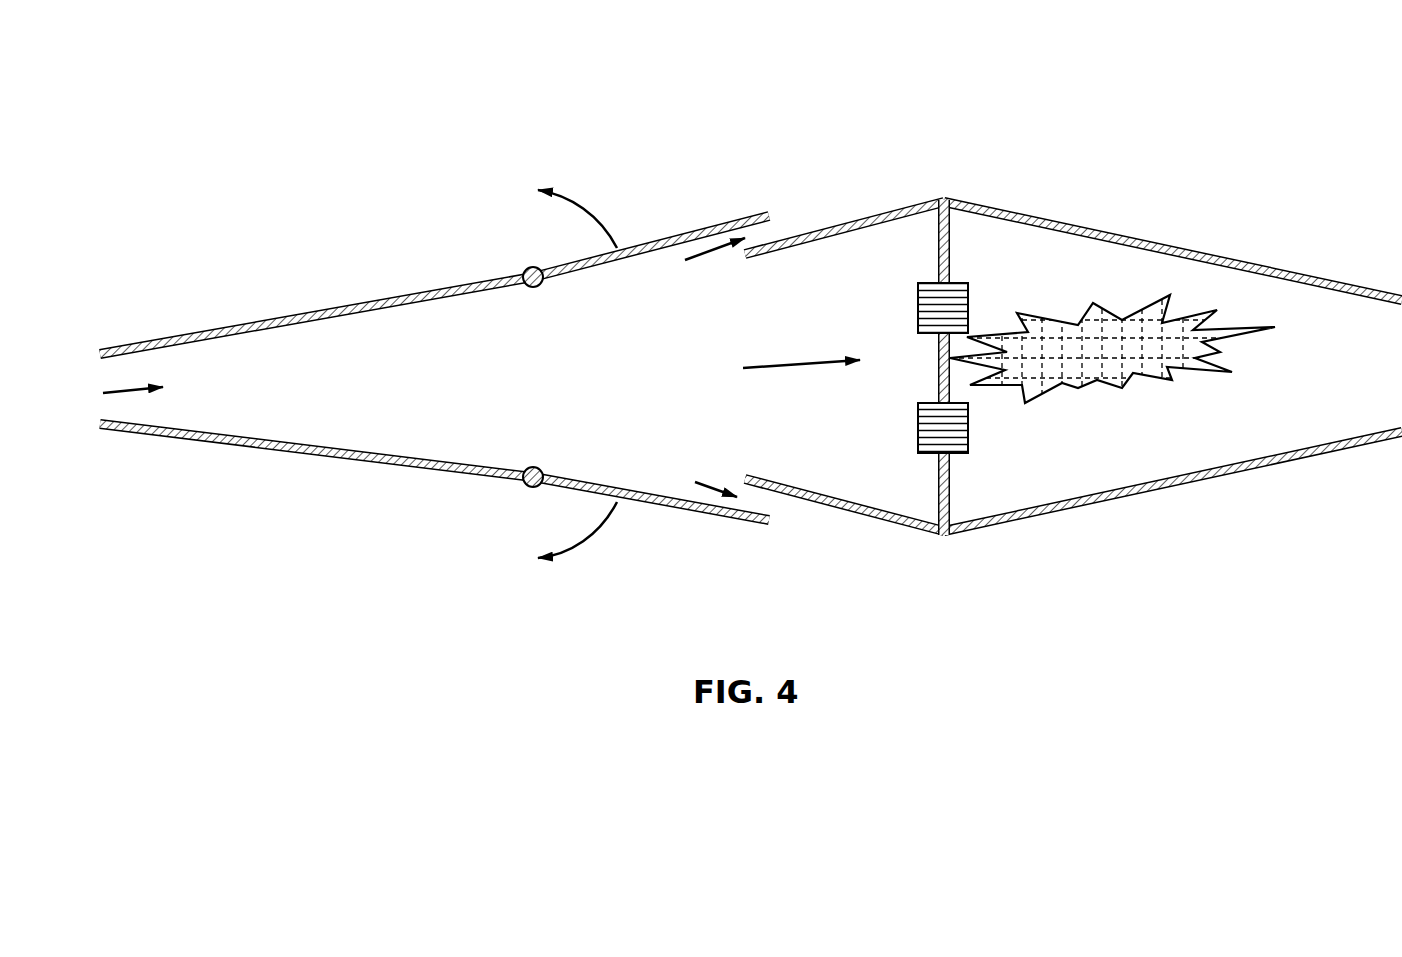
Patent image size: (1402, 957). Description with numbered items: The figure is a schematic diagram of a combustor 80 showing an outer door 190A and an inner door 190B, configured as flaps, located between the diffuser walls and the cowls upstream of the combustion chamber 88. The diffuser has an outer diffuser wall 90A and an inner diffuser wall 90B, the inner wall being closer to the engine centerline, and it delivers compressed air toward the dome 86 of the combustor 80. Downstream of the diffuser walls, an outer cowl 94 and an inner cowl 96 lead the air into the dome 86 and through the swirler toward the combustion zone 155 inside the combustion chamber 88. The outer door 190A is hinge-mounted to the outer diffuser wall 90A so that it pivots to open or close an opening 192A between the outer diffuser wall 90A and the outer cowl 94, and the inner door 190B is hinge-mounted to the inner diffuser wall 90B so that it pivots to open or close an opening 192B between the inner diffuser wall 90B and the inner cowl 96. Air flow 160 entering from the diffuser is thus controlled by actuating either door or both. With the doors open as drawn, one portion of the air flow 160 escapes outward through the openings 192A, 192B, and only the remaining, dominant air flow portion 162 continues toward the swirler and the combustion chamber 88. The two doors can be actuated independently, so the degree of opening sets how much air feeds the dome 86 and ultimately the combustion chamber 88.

The combustor 80 is at (846, 84).
The dome 86 is at (478, 432).
The combustion chamber 88 is at (1243, 430).
The outer diffuser wall 90A is at (333, 300).
The inner diffuser wall 90B is at (330, 466).
The outer cowl 94 is at (873, 212).
The inner cowl 96 is at (868, 524).
The combustion zone 155 is at (1110, 385).
The air flow 160 is at (132, 393).
The air flow portion 162 is at (805, 368).
The outer door 190A is at (668, 233).
The inner door 190B is at (668, 508).
The opening 192A is at (760, 238).
The opening 192B is at (760, 500).